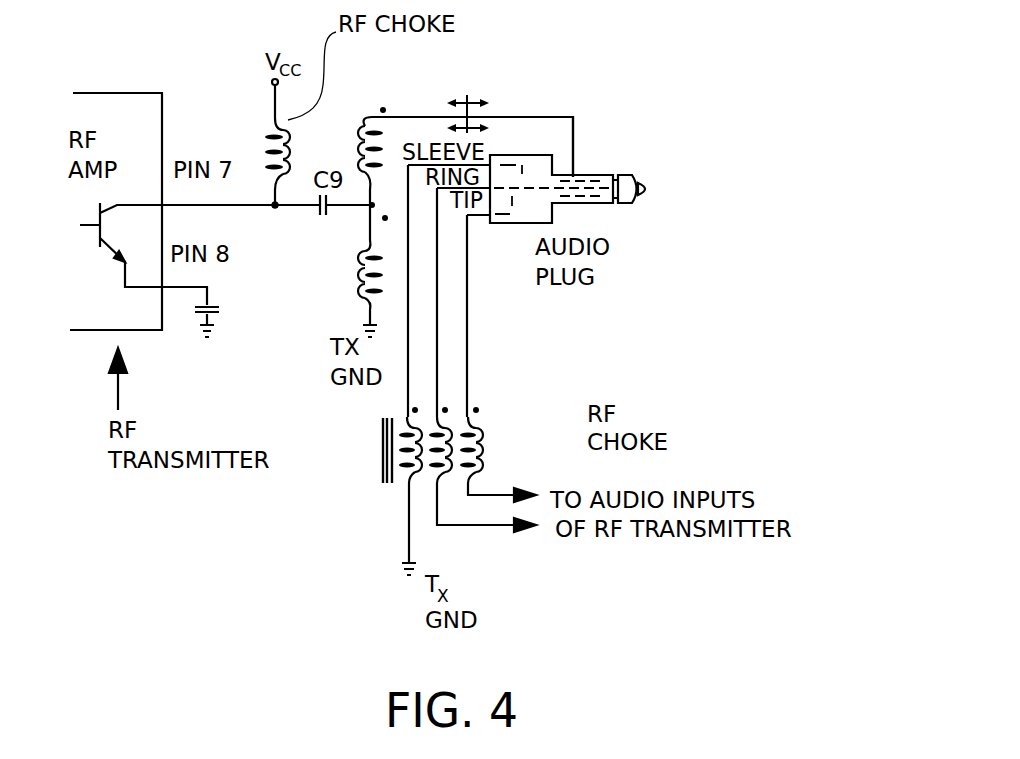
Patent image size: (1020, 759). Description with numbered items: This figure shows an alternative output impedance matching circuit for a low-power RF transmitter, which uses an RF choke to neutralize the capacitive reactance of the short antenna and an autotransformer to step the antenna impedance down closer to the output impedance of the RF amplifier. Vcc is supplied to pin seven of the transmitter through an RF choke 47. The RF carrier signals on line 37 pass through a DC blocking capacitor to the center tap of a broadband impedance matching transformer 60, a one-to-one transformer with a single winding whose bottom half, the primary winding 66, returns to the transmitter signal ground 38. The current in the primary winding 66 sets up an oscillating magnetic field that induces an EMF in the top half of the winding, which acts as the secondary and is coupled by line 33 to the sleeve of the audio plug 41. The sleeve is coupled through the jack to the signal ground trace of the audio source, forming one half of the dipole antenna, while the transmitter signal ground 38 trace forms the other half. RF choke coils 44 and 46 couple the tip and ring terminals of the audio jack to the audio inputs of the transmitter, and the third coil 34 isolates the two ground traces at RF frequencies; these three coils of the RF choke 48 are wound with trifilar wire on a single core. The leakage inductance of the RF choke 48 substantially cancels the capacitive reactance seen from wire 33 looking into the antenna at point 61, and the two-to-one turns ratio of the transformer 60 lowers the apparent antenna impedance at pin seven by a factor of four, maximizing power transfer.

The line 33 is at (517, 115).
The third coil 34 is at (406, 470).
The line 37 is at (291, 210).
The transmitter signal ground 38 is at (368, 315).
The audio plug 41 is at (591, 100).
The RF choke coil 44 is at (455, 425).
The RF choke coil 46 is at (483, 447).
The RF choke 47 is at (263, 152).
The RF choke 48 is at (500, 466).
The broadband impedance matching transformer 60 is at (389, 146).
The point 61 is at (467, 95).
The primary winding 66 is at (398, 257).